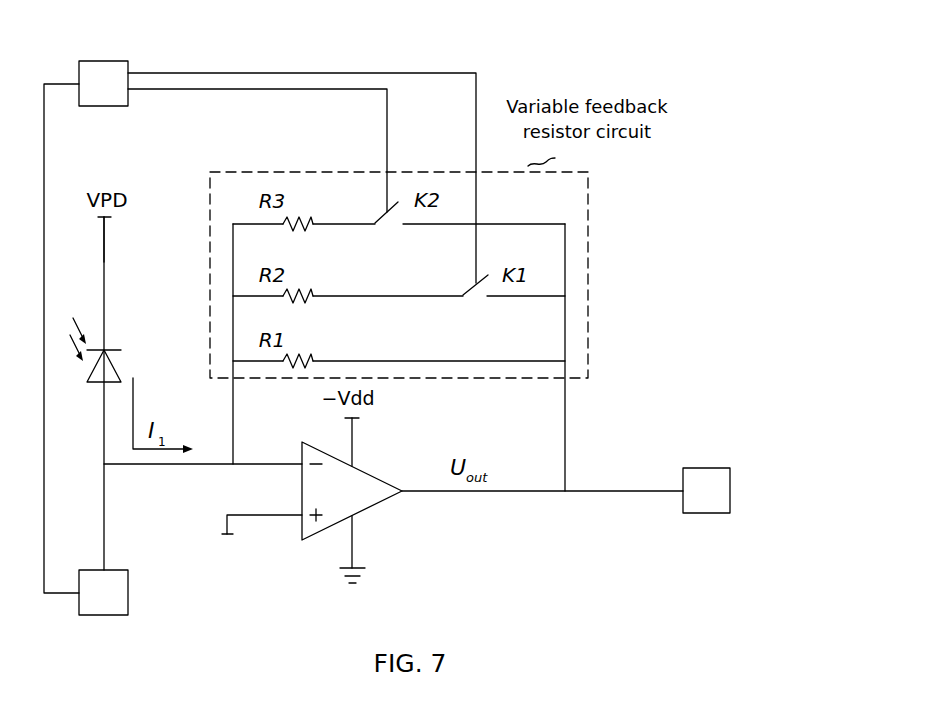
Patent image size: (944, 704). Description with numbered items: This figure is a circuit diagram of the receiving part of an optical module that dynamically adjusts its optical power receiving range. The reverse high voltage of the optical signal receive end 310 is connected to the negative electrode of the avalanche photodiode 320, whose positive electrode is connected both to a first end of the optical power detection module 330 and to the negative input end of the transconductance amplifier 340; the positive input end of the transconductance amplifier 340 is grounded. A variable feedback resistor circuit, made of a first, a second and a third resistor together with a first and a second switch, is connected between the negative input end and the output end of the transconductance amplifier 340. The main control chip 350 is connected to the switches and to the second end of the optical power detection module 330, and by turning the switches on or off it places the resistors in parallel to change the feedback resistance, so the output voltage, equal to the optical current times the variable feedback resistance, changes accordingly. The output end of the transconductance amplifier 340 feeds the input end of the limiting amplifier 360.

The optical signal receive end 310 is at (104, 255).
The avalanche photodiode 320 is at (113, 352).
The optical power detection module 330 is at (118, 570).
The transconductance amplifier 340 is at (367, 469).
The main control chip 350 is at (120, 61).
The limiting amplifier 360 is at (716, 468).